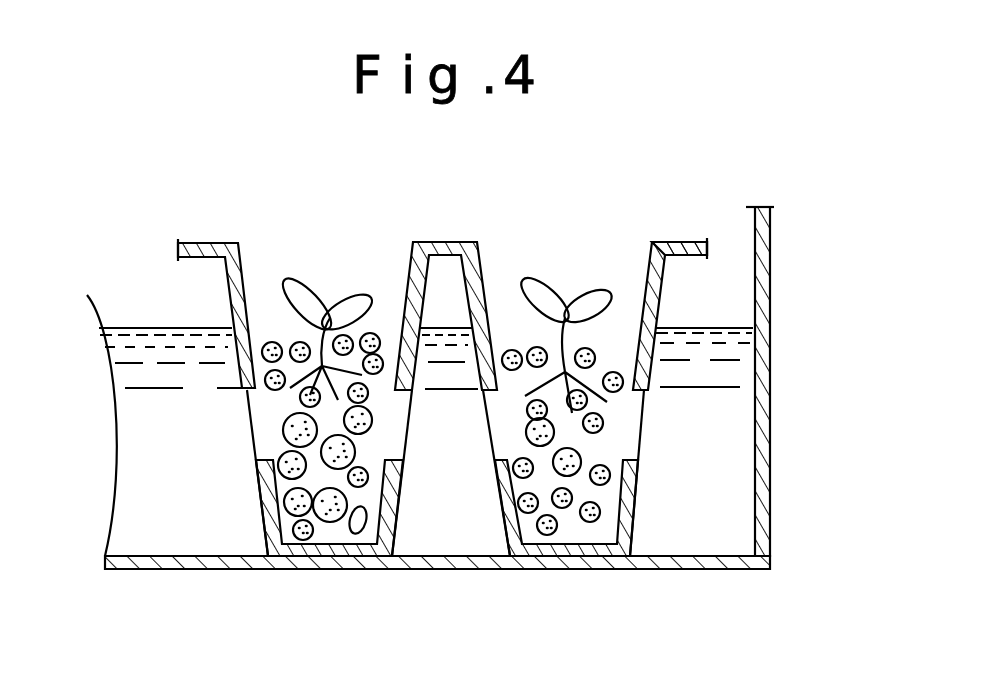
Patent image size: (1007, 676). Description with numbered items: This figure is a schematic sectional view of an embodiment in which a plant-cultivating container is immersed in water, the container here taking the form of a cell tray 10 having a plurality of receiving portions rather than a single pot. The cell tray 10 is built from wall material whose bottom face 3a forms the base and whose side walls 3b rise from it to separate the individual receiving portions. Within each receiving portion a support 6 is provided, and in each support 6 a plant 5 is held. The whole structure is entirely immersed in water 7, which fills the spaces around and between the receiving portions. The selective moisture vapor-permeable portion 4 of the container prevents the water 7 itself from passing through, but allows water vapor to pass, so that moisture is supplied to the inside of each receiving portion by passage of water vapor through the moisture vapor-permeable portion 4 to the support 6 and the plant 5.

The bottom face 3a is at (580, 553).
The side wall 3b is at (650, 313).
The selective moisture vapor-permeable portion 4 is at (247, 416).
The plant 5 is at (350, 298).
The support 6 is at (272, 464).
The water 7 is at (732, 375).
The cell tray 10 is at (688, 242).